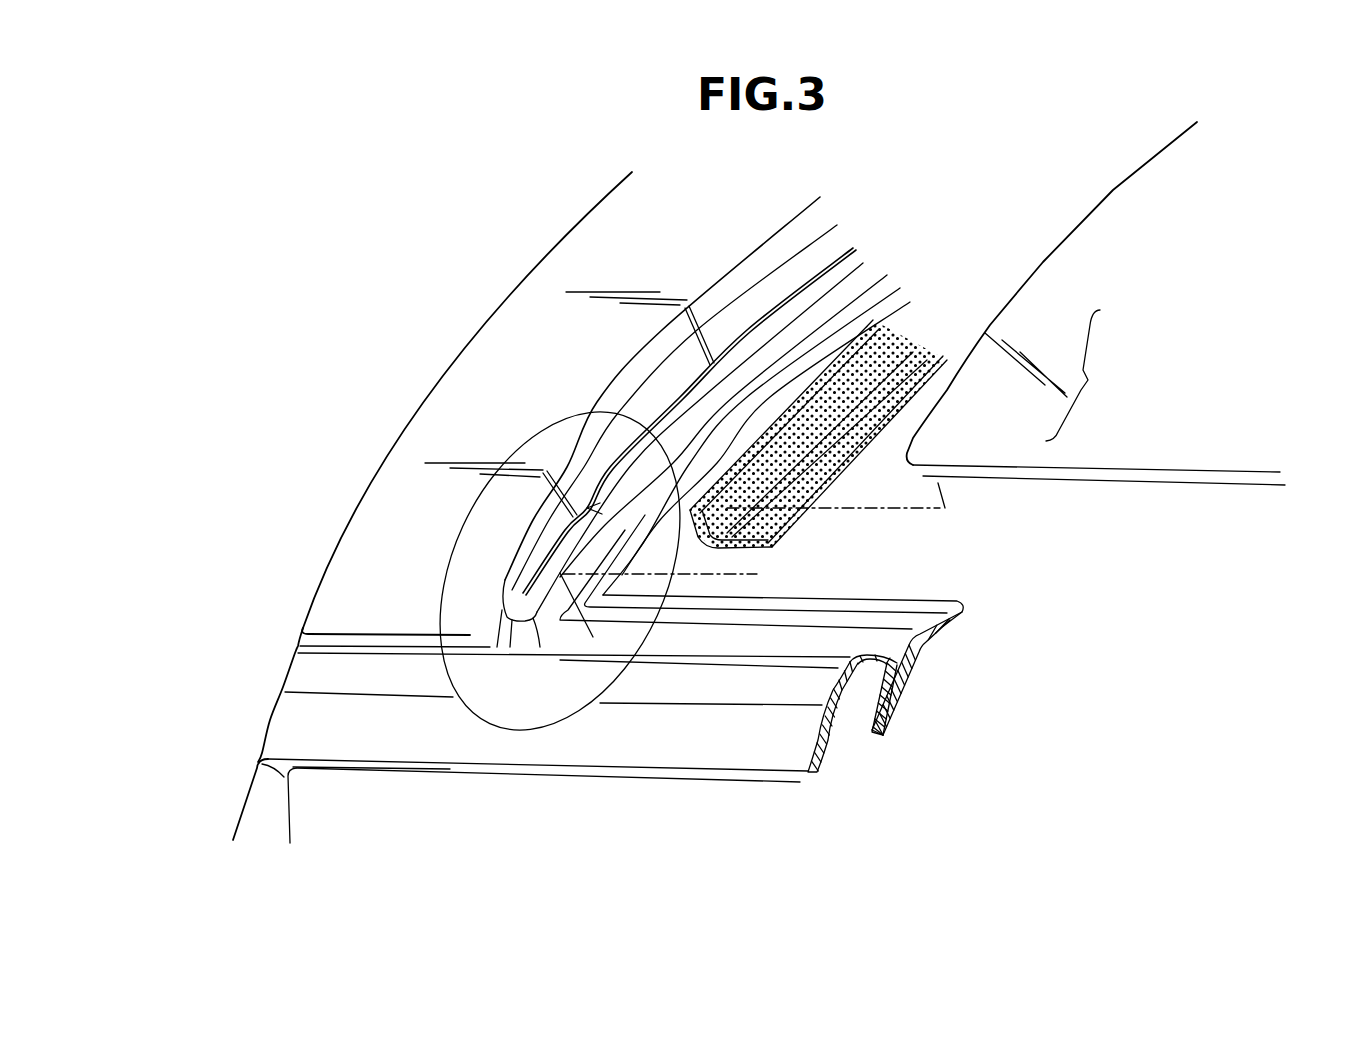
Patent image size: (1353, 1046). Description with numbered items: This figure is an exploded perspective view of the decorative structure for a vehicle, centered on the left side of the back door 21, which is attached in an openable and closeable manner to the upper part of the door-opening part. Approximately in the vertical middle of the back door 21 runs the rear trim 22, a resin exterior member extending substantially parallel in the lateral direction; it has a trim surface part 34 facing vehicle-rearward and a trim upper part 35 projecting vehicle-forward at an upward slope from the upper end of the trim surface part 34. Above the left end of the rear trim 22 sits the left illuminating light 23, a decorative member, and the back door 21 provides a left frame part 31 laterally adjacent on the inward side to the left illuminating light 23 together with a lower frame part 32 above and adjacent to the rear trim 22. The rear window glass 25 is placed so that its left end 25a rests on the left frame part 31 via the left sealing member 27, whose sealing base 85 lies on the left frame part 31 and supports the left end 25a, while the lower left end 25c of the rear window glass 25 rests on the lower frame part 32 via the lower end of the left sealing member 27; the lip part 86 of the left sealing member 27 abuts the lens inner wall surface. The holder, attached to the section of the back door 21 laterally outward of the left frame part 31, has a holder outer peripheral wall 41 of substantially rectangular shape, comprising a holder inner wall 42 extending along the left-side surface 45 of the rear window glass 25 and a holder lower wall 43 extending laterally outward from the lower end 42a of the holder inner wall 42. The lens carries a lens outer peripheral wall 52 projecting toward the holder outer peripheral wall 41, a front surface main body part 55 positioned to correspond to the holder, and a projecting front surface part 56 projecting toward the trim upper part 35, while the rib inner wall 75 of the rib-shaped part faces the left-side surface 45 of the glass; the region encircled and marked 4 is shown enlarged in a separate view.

The back door 21 is at (307, 546).
The rear trim 22 is at (560, 756).
The left illuminating light 23 is at (502, 333).
The rear window glass 25 is at (1156, 293).
The left end of the rear window glass 25a is at (1050, 283).
The lower left end of the rear window glass 25c is at (916, 468).
The left sealing member 27 is at (1115, 435).
The left frame part 31 is at (780, 343).
The lower frame part 32 is at (810, 640).
The trim surface part 34 is at (680, 737).
The trim upper part 35 is at (730, 655).
The holder outer peripheral wall 41 is at (587, 508).
The holder inner wall 42 is at (693, 393).
The lower end of the holder inner wall 42a is at (532, 612).
The holder lower wall 43 is at (508, 620).
The left-side surface of the rear window glass 45 is at (1100, 193).
The lens outer peripheral wall 52 is at (502, 660).
The front surface main body part 55 is at (603, 227).
The projecting front surface part 56 is at (350, 618).
The rib inner wall 75 is at (490, 643).
The sealing base 85 is at (887, 382).
The lip part 86 is at (880, 340).
The FIG. 4 detail region 4 is at (535, 435).